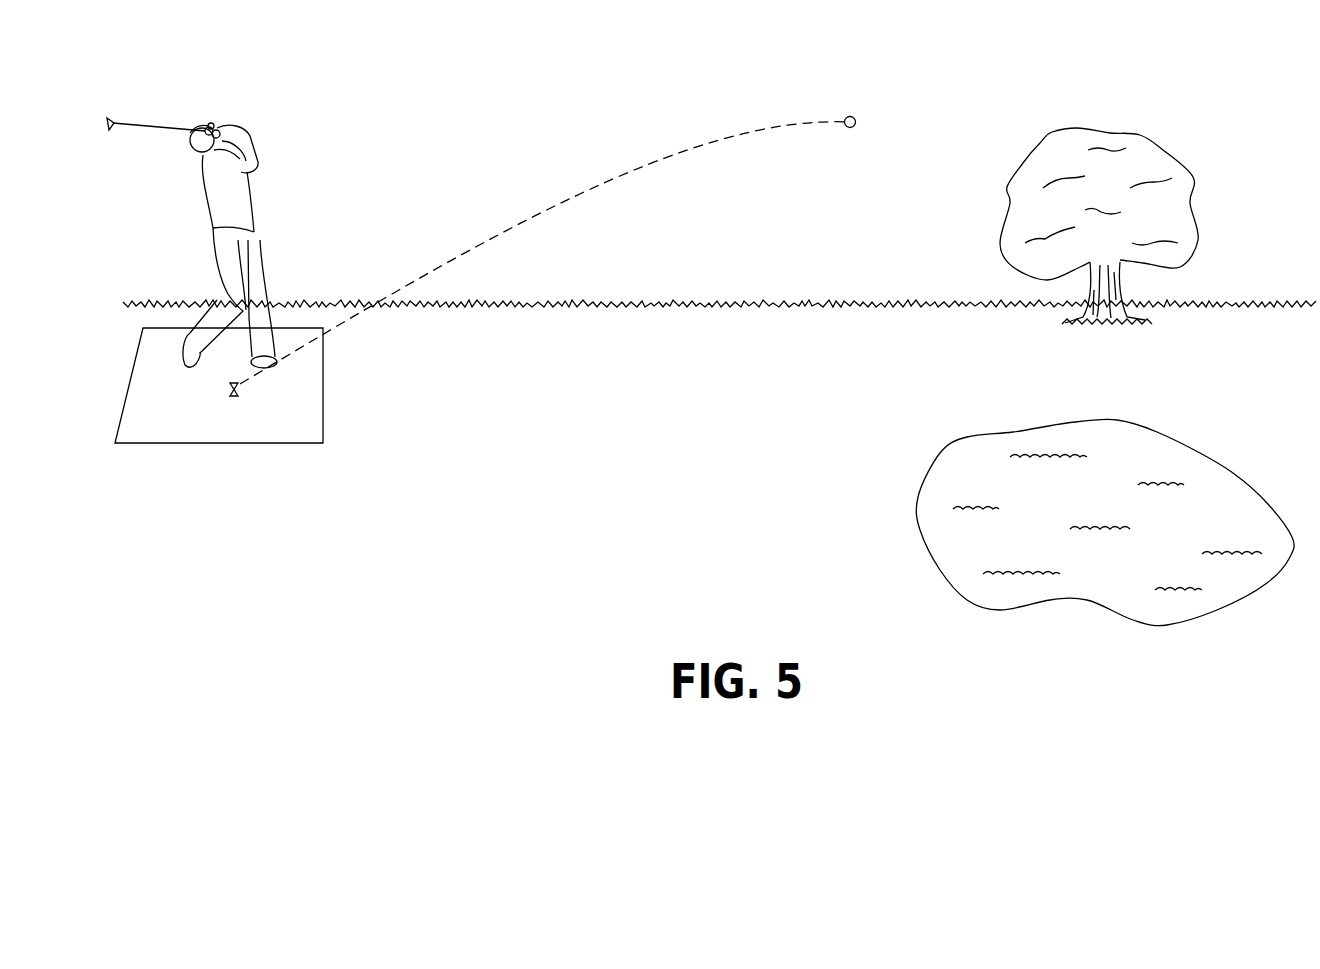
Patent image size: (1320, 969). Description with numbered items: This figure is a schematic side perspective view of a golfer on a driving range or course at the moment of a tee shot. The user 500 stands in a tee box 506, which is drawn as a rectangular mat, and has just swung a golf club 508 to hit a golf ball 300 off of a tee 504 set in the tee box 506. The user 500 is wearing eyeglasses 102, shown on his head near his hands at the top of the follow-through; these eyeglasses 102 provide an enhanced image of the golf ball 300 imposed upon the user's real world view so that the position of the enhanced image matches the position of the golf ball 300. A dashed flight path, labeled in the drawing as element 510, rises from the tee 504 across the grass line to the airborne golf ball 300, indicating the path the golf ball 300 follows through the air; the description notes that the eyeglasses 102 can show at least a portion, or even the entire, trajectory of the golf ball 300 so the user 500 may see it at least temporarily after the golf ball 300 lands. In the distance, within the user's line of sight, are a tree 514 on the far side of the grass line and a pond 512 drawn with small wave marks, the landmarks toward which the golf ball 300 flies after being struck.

The eyeglasses 102 is at (211, 124).
The golf ball 300 is at (853, 116).
The user 500 is at (238, 198).
The tee 504 is at (240, 390).
The tee box 506 is at (167, 422).
The golf club 508 is at (145, 132).
The ball trajectory 510 is at (628, 172).
The pond 512 is at (1158, 455).
The tree 514 is at (1148, 155).